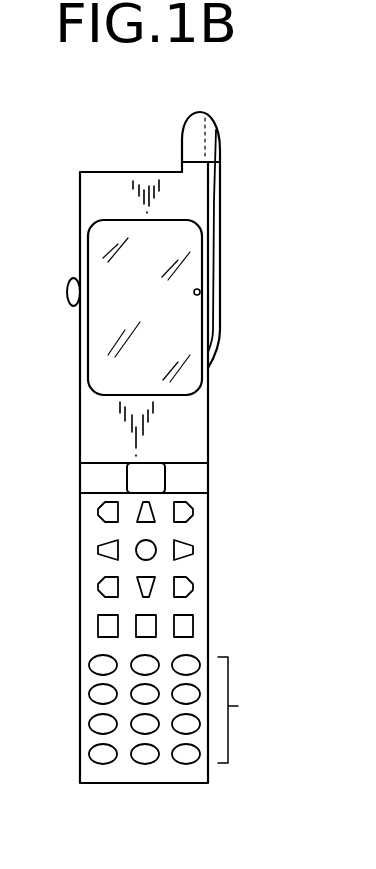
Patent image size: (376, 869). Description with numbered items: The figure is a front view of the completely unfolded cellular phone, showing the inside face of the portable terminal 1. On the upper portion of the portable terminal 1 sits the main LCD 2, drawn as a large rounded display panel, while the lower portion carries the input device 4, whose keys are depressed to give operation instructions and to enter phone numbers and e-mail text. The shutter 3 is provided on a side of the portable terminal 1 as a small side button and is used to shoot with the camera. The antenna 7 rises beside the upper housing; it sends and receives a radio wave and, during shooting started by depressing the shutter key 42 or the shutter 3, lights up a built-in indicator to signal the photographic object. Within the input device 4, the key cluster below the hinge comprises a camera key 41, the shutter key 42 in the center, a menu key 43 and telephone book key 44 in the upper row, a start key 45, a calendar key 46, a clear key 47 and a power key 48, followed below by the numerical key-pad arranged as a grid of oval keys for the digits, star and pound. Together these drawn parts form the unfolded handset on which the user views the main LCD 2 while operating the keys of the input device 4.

The portable terminal 1 is at (122, 171).
The main LCD 2 is at (200, 292).
The shutter 3 is at (68, 283).
The input device 4 is at (90, 790).
The antenna 7 is at (220, 142).
The camera key 41 is at (98, 587).
The shutter key 42 is at (148, 549).
The menu key 43 is at (98, 510).
The telephone book key 44 is at (193, 512).
The start key 45 is at (98, 627).
The calendar key 46 is at (193, 587).
The clear key 47 is at (143, 630).
The power key 48 is at (193, 627).